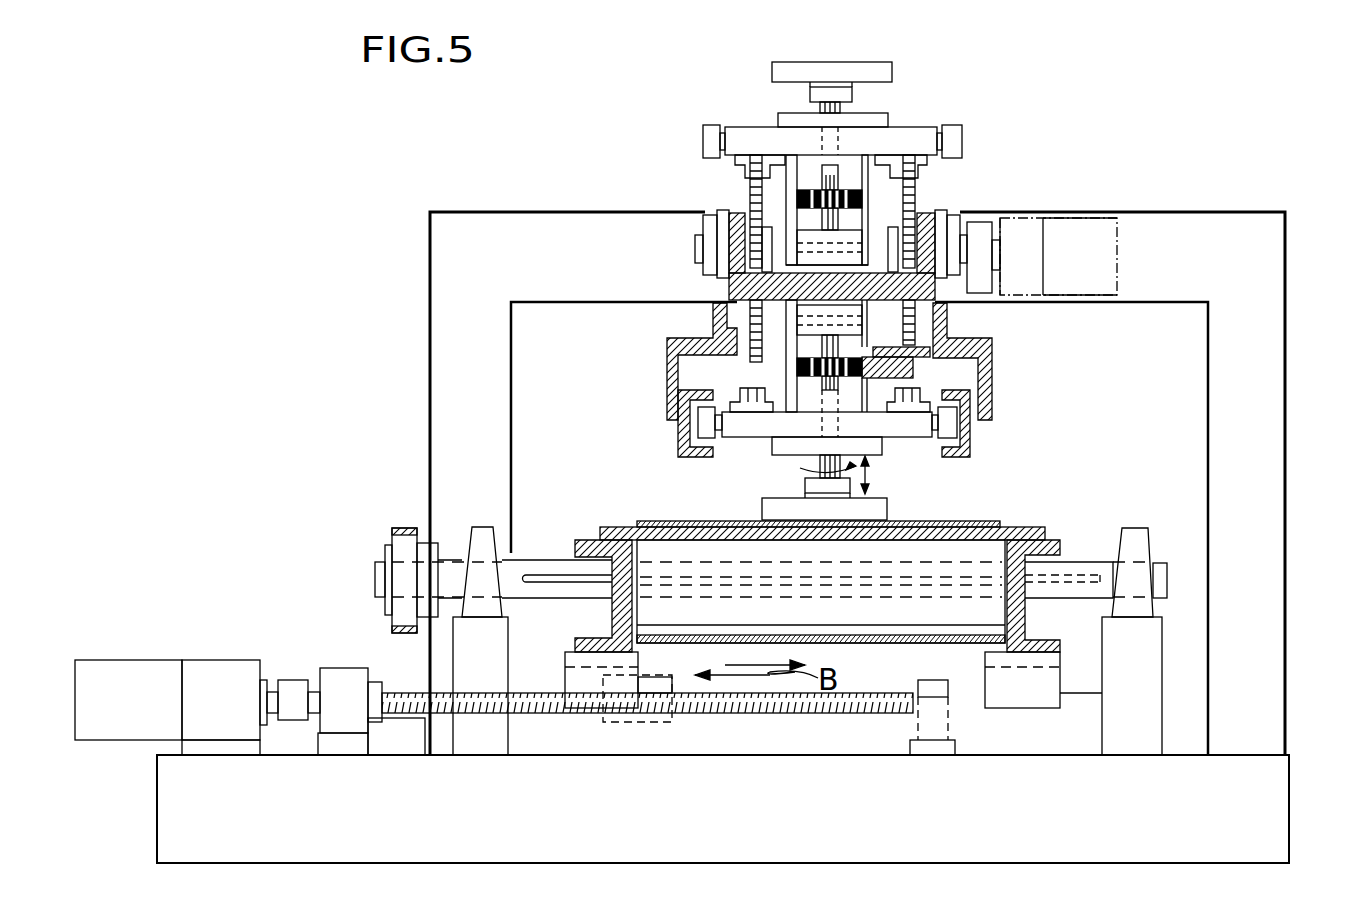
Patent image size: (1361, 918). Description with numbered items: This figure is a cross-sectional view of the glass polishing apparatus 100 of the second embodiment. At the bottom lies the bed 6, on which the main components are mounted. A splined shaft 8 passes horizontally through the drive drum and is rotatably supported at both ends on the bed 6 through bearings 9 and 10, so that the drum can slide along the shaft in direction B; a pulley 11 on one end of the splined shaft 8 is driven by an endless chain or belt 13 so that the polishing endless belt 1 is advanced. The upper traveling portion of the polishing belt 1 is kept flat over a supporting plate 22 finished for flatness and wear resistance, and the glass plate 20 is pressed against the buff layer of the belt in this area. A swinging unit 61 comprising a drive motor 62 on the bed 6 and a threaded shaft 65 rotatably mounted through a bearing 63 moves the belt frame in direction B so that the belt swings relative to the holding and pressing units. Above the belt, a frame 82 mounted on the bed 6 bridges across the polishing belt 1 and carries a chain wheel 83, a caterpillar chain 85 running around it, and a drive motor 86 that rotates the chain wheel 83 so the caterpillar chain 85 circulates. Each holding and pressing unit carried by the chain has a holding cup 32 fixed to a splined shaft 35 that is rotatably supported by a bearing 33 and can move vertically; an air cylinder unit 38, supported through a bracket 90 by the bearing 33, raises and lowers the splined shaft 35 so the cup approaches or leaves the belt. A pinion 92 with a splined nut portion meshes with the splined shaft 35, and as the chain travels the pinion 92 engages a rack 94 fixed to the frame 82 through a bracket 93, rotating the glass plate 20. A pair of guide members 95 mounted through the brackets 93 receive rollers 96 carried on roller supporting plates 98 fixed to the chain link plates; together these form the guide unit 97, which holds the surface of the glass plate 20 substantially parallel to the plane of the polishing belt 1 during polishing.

The polishing endless belt 1 is at (972, 525).
The bed 6 is at (1289, 800).
The splined shaft 8 is at (540, 598).
The bearing 9 is at (483, 530).
The bearing 10 is at (1135, 530).
The pulley 11 is at (425, 545).
The endless chain or belt 13 is at (395, 530).
The glass plate 20 is at (768, 545).
The supporting plate 22 is at (1020, 532).
The holding cup 32 is at (853, 63).
The bearing 33 is at (880, 117).
The splined shaft 35 is at (813, 108).
The air cylinder unit 38 is at (807, 243).
The swinging unit 61 is at (289, 640).
The drive motor 62 is at (218, 672).
The bearing 63 is at (343, 678).
The threaded shaft 65 is at (402, 693).
The frame 82 is at (1157, 220).
The chain wheel 83 is at (917, 193).
The caterpillar chain 85 is at (672, 392).
The drive motor 86 is at (1062, 222).
The bracket 90 is at (800, 383).
The pinion 92 is at (863, 197).
The bracket 93 is at (962, 342).
The rack 94 is at (980, 373).
The guide member 95 is at (690, 440).
The roller 96 is at (708, 145).
The guide unit 97 is at (630, 465).
The roller supporting plate 98 is at (917, 135).
The apparatus 100 is at (1088, 100).